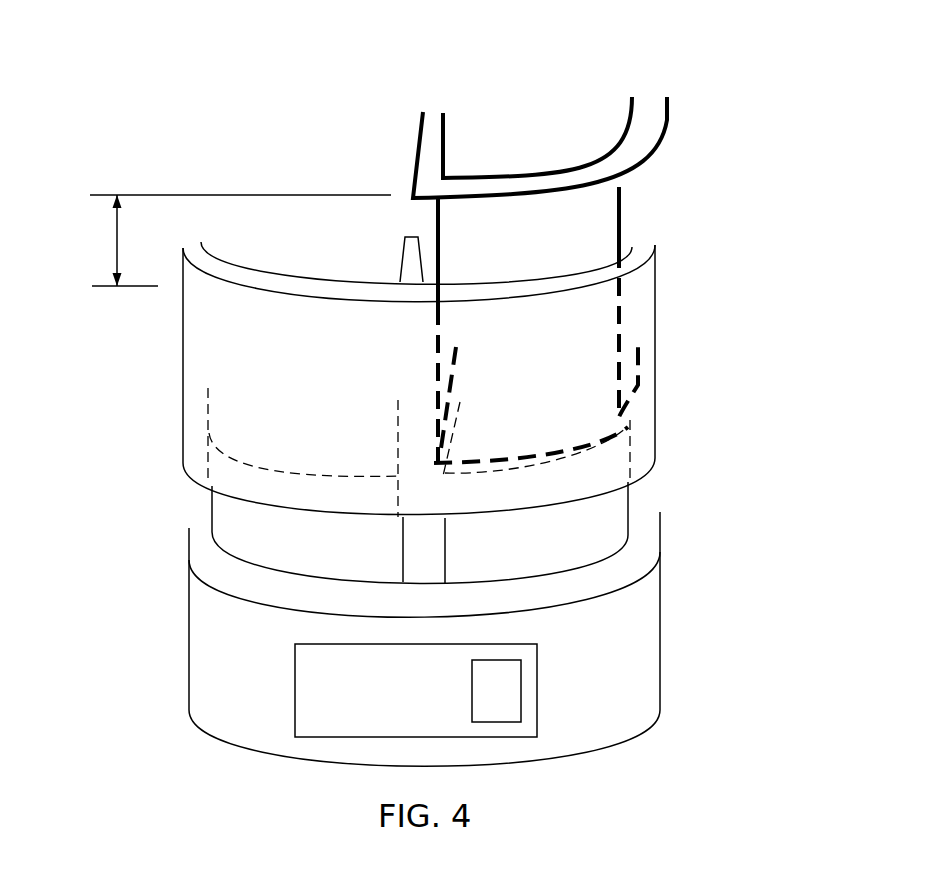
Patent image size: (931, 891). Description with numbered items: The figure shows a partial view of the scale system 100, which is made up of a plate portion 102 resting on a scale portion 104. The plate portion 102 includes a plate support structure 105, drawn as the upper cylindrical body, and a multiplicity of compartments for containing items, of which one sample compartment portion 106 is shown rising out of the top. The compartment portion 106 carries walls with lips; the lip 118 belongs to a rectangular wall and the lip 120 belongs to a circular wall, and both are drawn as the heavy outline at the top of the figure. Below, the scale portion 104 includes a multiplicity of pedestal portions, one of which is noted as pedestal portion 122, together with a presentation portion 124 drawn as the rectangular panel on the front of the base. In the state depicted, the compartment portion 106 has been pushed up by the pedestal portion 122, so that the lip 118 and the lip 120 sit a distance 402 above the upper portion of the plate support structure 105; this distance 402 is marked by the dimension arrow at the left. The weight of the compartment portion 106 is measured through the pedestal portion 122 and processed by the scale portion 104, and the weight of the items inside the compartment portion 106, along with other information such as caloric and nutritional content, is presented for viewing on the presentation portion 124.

The scale system 100 is at (246, 97).
The plate portion 102 is at (698, 243).
The scale portion 104 is at (660, 678).
The plate support structure 105 is at (657, 338).
The compartment portion 106 is at (622, 218).
The lip 118 is at (412, 173).
The lip 120 is at (667, 157).
The pedestal portion 122 is at (632, 502).
The presentation portion 124 is at (337, 705).
The distance 402 is at (112, 243).